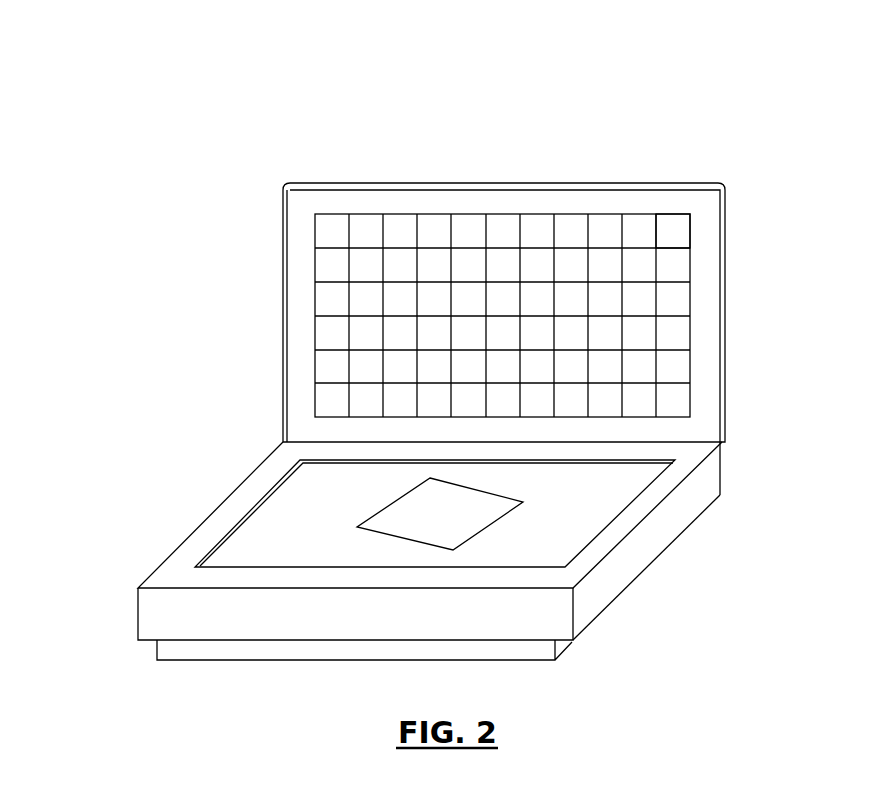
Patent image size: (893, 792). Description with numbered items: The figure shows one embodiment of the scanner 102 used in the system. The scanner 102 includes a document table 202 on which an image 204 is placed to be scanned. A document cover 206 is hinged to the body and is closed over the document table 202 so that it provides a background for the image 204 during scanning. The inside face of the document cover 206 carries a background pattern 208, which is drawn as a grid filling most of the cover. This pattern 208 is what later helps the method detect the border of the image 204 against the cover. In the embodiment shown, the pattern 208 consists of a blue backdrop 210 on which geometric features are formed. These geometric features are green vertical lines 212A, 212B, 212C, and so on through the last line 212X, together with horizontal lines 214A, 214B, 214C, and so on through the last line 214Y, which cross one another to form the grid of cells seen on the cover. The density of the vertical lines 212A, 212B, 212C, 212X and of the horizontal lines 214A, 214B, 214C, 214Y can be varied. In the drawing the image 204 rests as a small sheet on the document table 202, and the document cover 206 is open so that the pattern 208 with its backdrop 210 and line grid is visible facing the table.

The scanner 102 is at (98, 126).
The document table 202 is at (283, 533).
The image 204 is at (428, 515).
The document cover 206 is at (727, 305).
The background pattern 208 is at (548, 197).
The blue backdrop 210 is at (665, 233).
The green vertical line 212A is at (315, 236).
The green vertical line 212B is at (347, 270).
The green vertical line 212C is at (383, 306).
The green vertical line 212X is at (688, 398).
The horizontal line 214A is at (335, 215).
The horizontal line 214B is at (360, 248).
The horizontal line 214C is at (393, 281).
The horizontal line 214Y is at (667, 417).